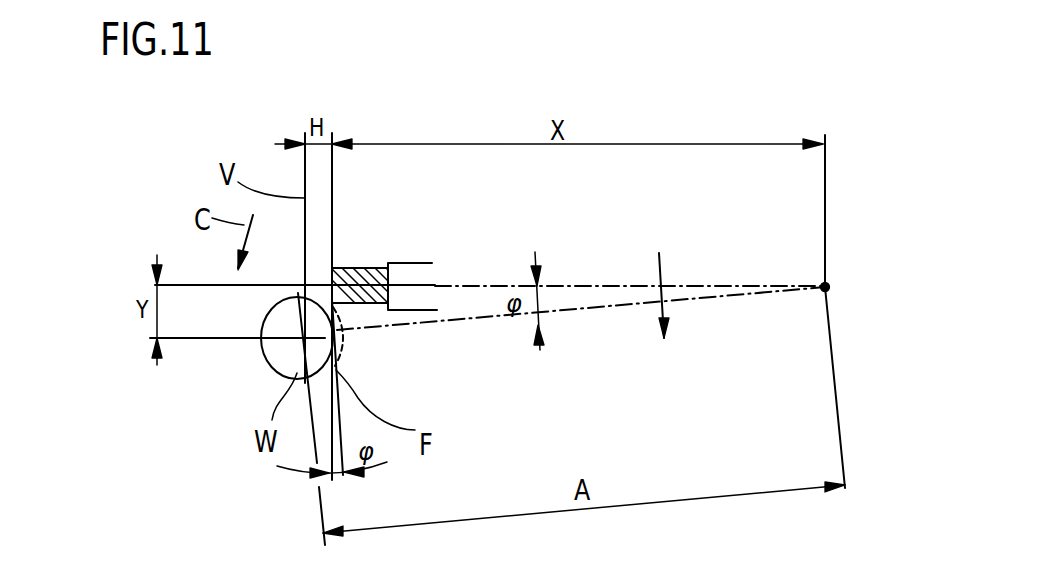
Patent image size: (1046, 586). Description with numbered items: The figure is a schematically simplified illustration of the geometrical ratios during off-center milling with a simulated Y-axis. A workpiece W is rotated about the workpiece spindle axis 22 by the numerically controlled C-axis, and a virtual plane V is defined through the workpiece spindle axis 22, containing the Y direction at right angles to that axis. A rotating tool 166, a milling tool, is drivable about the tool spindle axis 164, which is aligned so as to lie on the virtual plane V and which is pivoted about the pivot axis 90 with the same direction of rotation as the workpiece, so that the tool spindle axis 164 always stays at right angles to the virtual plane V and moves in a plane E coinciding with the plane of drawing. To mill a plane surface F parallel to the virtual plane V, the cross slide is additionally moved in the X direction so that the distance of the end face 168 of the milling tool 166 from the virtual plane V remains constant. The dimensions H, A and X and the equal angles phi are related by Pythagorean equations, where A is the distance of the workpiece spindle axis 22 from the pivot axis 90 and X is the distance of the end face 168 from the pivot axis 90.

The workpiece spindle axis 22 is at (277, 367).
The pivot axis 90 is at (828, 287).
The tool spindle axis 164 is at (436, 284).
The rotating tool 166 is at (367, 267).
The end face 168 is at (330, 256).